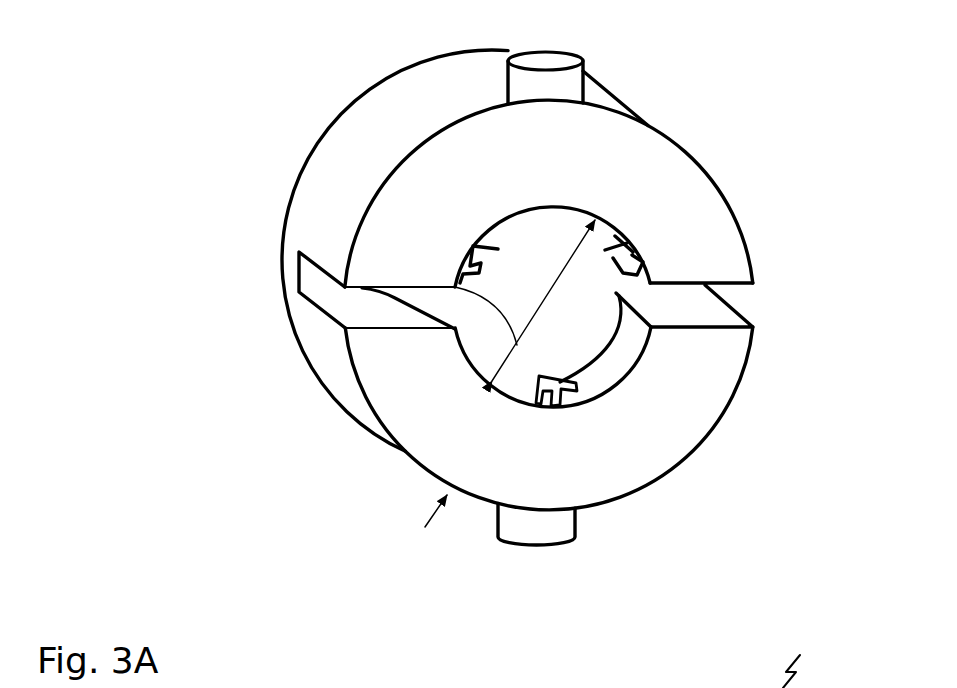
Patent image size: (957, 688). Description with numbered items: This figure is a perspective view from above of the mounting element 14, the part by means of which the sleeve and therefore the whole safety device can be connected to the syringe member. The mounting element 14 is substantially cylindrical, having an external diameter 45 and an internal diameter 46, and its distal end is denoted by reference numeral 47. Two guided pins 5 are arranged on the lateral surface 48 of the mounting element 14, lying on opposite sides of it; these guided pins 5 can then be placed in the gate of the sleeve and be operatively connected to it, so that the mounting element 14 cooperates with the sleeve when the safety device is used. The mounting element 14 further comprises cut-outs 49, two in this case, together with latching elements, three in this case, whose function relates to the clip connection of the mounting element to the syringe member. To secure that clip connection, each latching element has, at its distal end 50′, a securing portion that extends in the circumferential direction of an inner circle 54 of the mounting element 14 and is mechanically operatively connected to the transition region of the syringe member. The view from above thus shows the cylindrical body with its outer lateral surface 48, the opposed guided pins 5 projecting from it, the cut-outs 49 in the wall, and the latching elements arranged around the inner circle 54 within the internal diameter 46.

The guided pin 5 is at (542, 64).
The mounting element 14 is at (727, 73).
The external diameter 45 is at (690, 143).
The internal diameter 46 is at (455, 284).
The distal end 47 is at (420, 439).
The lateral surface 48 is at (345, 148).
The cut-out 49 is at (777, 299).
The distal end 50′ is at (622, 282).
The inner circle 54 is at (488, 247).